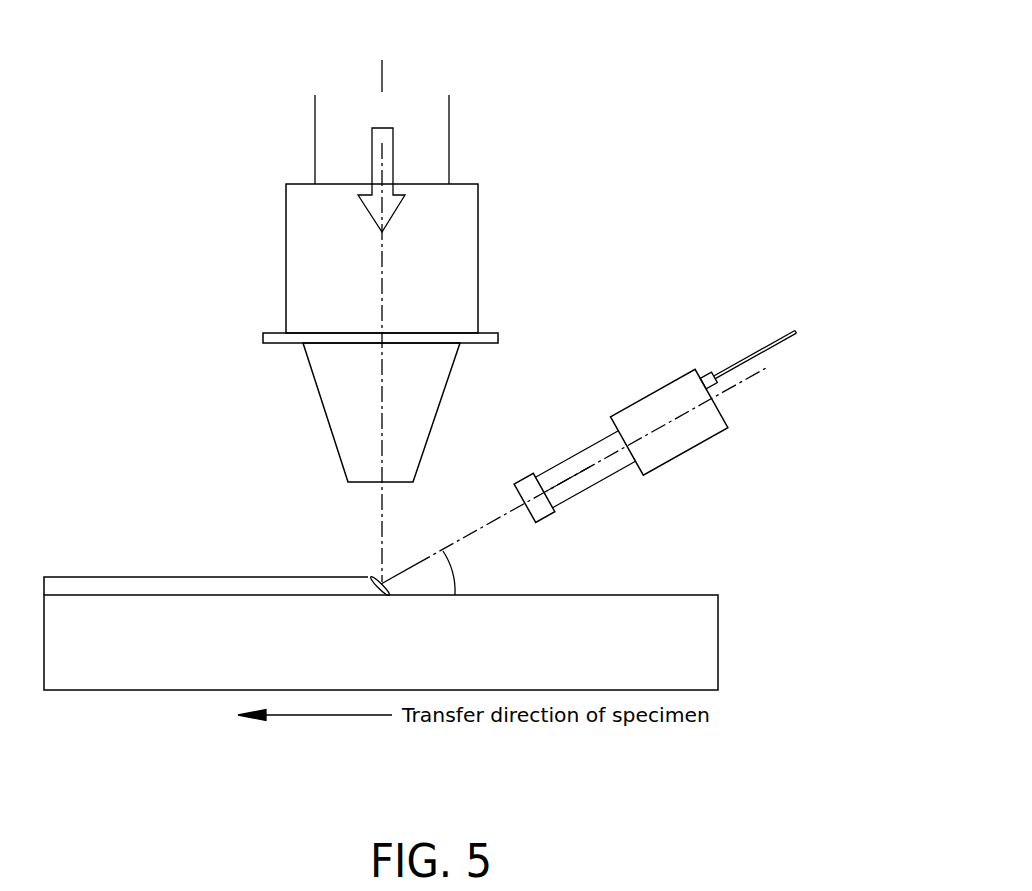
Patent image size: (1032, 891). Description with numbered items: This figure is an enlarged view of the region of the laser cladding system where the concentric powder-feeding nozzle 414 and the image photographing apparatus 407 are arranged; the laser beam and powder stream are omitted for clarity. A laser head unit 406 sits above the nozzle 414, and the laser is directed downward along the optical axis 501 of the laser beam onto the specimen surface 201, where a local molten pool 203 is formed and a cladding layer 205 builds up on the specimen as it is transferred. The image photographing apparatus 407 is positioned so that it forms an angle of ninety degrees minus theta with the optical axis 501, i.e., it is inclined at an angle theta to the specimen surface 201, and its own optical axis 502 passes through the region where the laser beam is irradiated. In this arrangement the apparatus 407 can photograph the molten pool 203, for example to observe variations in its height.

The specimen surface 201 is at (640, 582).
The molten pool 203 is at (362, 565).
The cladding layer 205 is at (127, 573).
The laser irradiation optical system head 406 is at (274, 240).
The image photographing apparatus 407 is at (648, 382).
The concentric powder-feeding nozzle 414 is at (310, 405).
The optical axis of the laser beam 501 is at (377, 294).
The optical axis of the image photographing apparatus 502 is at (638, 479).